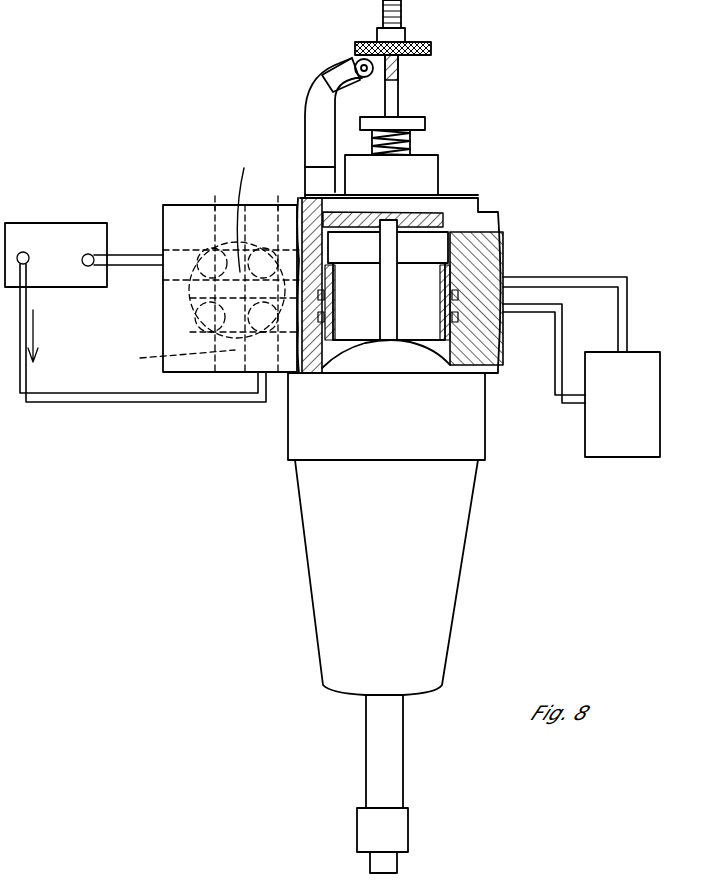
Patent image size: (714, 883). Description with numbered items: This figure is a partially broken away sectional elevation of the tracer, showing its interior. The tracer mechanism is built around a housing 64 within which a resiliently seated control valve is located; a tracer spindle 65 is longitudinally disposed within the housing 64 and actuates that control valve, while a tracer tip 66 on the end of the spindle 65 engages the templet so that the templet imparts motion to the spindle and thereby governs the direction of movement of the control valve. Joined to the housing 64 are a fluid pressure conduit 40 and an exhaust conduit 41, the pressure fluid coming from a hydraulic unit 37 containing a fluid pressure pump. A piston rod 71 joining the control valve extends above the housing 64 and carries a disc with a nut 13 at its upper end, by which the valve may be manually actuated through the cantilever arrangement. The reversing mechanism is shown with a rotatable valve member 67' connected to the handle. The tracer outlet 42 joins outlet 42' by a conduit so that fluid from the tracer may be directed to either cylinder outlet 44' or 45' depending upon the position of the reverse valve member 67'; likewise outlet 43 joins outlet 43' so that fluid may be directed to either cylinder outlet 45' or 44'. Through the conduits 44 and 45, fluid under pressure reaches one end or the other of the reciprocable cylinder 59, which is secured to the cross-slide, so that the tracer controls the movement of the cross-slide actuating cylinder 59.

The nut 13 is at (405, 35).
The piston rod 71 is at (397, 95).
The fluid pressure outlet opening 43 is at (291, 227).
The rotatable member 67' is at (254, 208).
The cylinder outlet 44' is at (211, 192).
The outlet 43' is at (267, 192).
The cylinder 59 is at (60, 233).
The conduit 44 is at (128, 243).
The outlet 42' is at (199, 295).
The cylinder outlet 45' is at (171, 362).
The conduit 45 is at (143, 356).
The fluid pressure outlet opening 42 is at (231, 346).
The exhaust conduit 41 is at (583, 280).
The fluid pressure conduit 40 is at (557, 345).
The hydraulic unit 37 is at (626, 452).
The housing 64 is at (323, 560).
The tracer spindle 65 is at (380, 727).
The tracer tip 66 is at (367, 833).